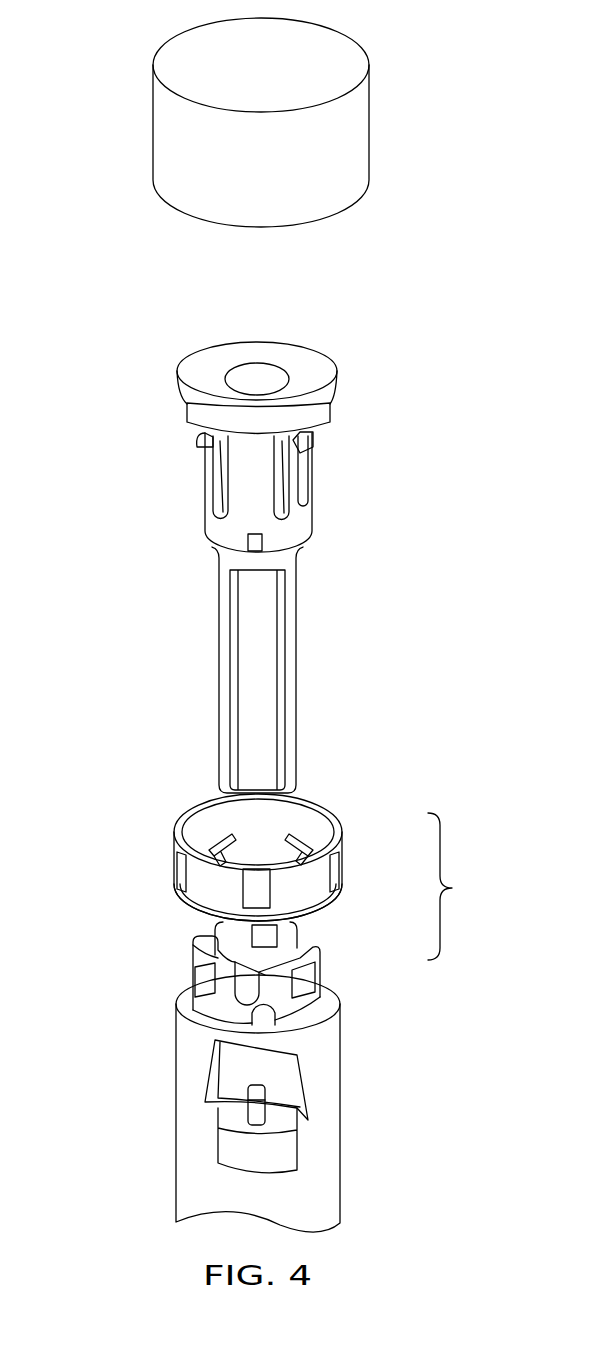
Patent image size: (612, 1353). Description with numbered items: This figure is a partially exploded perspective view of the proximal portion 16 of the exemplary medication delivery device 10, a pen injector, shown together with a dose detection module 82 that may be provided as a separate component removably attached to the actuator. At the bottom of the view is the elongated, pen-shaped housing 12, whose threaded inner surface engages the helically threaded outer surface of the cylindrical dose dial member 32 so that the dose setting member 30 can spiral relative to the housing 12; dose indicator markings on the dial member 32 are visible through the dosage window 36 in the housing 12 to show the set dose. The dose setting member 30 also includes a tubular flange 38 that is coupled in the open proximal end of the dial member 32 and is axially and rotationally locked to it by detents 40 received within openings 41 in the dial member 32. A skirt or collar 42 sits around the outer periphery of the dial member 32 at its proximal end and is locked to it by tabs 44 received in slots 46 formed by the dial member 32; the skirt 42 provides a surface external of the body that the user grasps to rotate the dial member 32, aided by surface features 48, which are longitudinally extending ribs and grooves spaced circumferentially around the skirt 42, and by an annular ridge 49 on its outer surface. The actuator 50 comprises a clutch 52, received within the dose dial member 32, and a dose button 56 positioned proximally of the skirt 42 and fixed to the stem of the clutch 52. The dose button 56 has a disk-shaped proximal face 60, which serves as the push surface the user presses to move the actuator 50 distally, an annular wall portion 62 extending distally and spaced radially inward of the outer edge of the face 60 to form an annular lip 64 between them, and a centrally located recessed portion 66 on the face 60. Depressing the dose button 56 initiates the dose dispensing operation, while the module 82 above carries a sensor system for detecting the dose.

The module 82 is at (133, 112).
The medication delivery device 10 is at (137, 332).
The actuator 50 is at (137, 362).
The proximal end surface or face 60 is at (196, 378).
The recessed portion 66 is at (254, 378).
The dose button 56 is at (308, 358).
The annular lip 64 is at (338, 376).
The annular wall portion 62 is at (200, 412).
The tubular flange 38 is at (237, 522).
The detents 40 is at (313, 448).
The clutch 52 is at (303, 619).
The proximal portion 16 is at (178, 610).
The dose setting member 30 is at (375, 743).
The skirt or collar 42 is at (346, 856).
The tabs 44 is at (207, 848).
The surface features 48 is at (182, 870).
The annular ridge 49 is at (186, 900).
The dose dial member 32 is at (308, 1000).
The openings 41 is at (200, 980).
The slots 46 is at (245, 985).
The housing 12 is at (346, 1193).
The dosage window 36 is at (245, 1076).